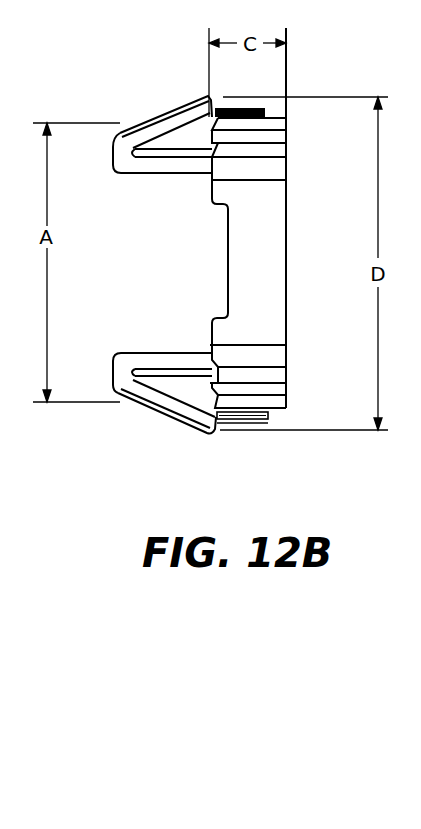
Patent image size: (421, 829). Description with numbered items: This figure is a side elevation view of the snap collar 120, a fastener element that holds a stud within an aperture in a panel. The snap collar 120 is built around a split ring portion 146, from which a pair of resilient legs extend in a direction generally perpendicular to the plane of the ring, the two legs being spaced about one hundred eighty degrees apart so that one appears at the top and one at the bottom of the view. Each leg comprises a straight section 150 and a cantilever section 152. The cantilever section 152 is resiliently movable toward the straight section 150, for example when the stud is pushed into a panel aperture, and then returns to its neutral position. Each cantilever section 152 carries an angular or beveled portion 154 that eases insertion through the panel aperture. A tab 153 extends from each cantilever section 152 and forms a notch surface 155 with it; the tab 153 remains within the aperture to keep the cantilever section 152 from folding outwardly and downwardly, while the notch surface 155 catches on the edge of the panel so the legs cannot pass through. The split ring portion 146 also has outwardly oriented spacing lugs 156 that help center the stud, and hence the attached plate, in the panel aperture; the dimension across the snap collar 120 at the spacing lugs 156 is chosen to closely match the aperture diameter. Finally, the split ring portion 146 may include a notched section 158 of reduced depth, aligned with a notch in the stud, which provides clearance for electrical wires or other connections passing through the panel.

The snap collar 120 is at (312, 236).
The split ring portion 146 is at (277, 343).
The straight section 150 is at (177, 165).
The cantilever section 152 is at (183, 414).
The tab 153 is at (254, 421).
The beveled portion 154 is at (153, 119).
The notch surface 155 is at (220, 426).
The spacing lugs 156 is at (270, 125).
The notched section 158 is at (228, 279).